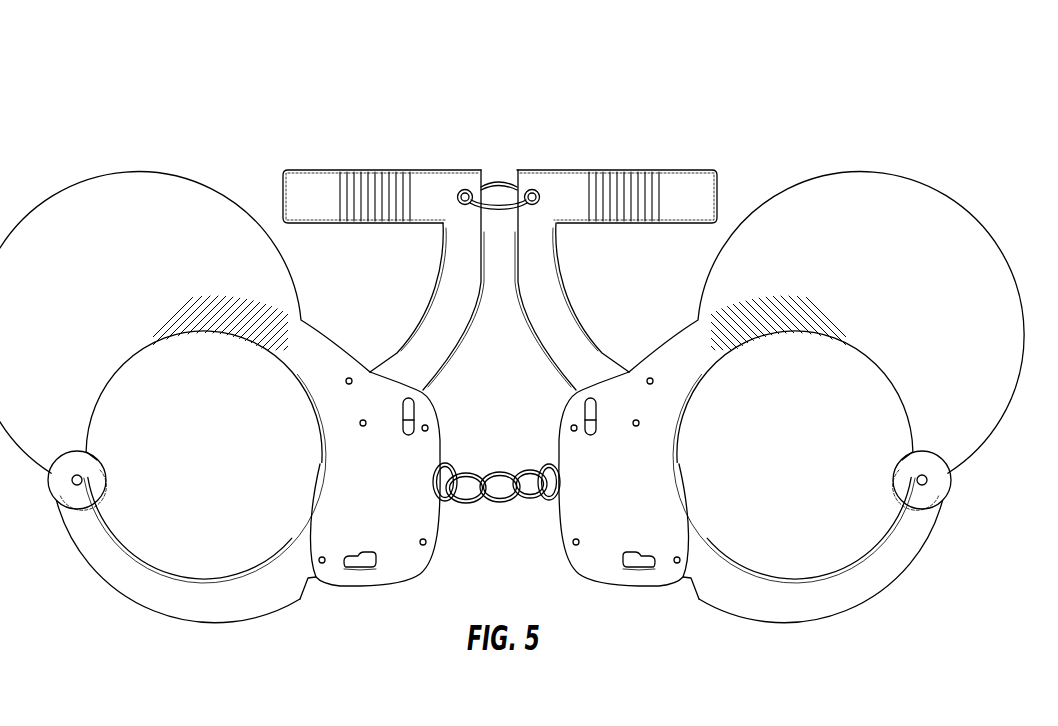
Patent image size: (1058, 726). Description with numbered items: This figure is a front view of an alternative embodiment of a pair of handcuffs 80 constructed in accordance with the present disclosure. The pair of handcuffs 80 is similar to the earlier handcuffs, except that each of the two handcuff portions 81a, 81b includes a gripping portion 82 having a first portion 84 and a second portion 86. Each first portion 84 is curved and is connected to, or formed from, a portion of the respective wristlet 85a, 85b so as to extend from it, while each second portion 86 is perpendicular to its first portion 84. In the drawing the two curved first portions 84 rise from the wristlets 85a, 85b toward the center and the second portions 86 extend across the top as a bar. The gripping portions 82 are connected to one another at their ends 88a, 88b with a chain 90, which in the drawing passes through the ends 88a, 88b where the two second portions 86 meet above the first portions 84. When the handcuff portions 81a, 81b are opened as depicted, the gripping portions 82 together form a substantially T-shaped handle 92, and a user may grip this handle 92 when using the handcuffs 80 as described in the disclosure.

The pair of handcuffs 80 is at (512, 345).
The handcuff portion 81a is at (220, 431).
The handcuff portion 81b is at (791, 431).
The gripping portion 82 is at (437, 267).
The first portion 84 is at (457, 322).
The wristlet 85a is at (233, 612).
The wristlet 85b is at (775, 612).
The second portion 86 is at (323, 180).
The end 88a is at (465, 189).
The end 88b is at (532, 196).
The chain 90 is at (504, 213).
The handle 92 is at (413, 170).